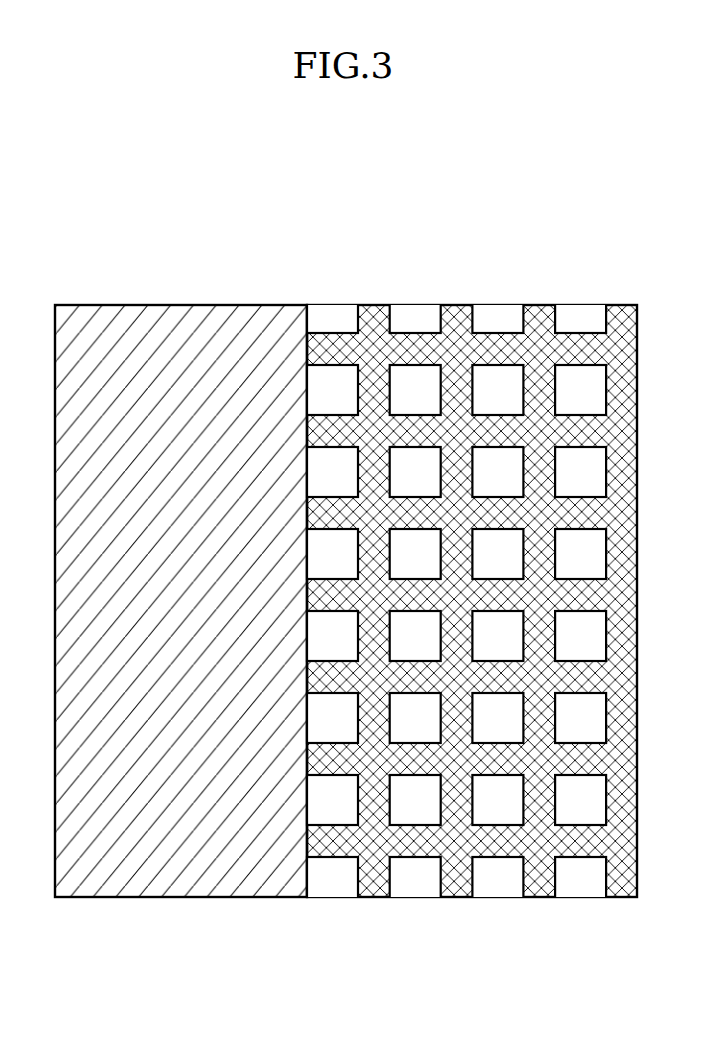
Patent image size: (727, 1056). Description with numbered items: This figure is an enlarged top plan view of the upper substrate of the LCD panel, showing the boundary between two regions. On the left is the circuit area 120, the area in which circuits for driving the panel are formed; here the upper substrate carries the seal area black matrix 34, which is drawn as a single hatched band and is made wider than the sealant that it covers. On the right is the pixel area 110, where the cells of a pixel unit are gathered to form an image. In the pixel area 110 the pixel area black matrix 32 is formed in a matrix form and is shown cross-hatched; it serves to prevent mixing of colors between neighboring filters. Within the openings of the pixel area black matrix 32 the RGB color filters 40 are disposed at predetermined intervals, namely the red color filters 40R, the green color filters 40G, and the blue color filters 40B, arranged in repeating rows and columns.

The circuit area 120 is at (307, 305).
The pixel area 110 is at (307, 273).
The seal area black matrix 34 is at (202, 877).
The pixel area black matrix 32 is at (547, 897).
The RGB color filters 40 is at (305, 958).
The blue color filter 40B is at (333, 818).
The red color filter 40R is at (427, 818).
The green color filter 40G is at (508, 818).